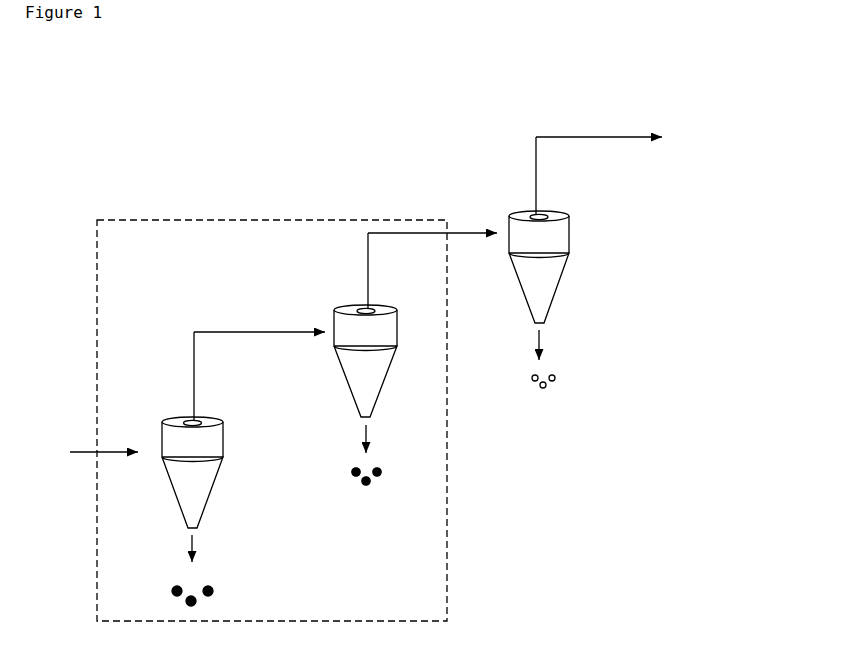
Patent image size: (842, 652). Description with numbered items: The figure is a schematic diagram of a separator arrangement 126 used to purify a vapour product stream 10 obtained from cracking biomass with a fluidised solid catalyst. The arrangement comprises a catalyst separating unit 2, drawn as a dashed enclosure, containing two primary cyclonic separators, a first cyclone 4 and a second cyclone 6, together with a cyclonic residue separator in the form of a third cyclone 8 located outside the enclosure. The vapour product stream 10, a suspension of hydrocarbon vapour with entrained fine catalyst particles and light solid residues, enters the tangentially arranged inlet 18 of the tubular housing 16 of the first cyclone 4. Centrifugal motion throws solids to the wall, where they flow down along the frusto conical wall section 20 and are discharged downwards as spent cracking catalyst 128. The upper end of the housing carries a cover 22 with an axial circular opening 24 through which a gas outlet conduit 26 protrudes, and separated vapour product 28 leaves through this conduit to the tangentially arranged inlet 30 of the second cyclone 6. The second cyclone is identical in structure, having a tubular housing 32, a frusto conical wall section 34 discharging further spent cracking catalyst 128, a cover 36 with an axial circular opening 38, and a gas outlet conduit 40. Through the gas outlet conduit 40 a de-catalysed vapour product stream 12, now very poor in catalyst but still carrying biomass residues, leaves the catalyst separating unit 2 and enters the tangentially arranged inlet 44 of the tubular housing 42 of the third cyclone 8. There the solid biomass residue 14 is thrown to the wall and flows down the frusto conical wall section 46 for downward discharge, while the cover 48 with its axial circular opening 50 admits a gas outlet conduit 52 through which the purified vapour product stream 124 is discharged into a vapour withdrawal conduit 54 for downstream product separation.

The catalyst separating unit 2 is at (145, 213).
The first cyclone 4 is at (185, 463).
The second cyclone 6 is at (365, 347).
The third cyclone 8 is at (538, 252).
The vapour product stream 10 is at (89, 452).
The de-catalysed vapour product stream 12 is at (432, 213).
The solid biomass residue 14 is at (559, 359).
The tubular housing 16 is at (162, 449).
The tangentially arranged inlet 18 is at (162, 432).
The frusto conical wall section 20 is at (211, 486).
The cover 22 is at (223, 430).
The axial circular opening 24 is at (199, 419).
The gas outlet conduit 26 is at (207, 376).
The separated vapour product 28 is at (259, 319).
The tangentially arranged inlet 30 is at (334, 321).
The tubular housing 32 is at (335, 337).
The frusto conical wall section 34 is at (383, 378).
The cover 36 is at (397, 318).
The axial circular opening 38 is at (372, 308).
The gas outlet conduit 40 is at (380, 270).
The tubular housing 42 is at (509, 241).
The tangentially arranged inlet 44 is at (509, 226).
The frusto conical wall section 46 is at (553, 283).
The cover 48 is at (569, 224).
The axial circular opening 50 is at (545, 214).
The gas outlet conduit 52 is at (547, 175).
The vapour withdrawal conduit 54 is at (599, 124).
The purified vapour product stream 124 is at (688, 137).
The separator arrangement 126 is at (393, 112).
The spent cracking catalyst 128 is at (297, 515).